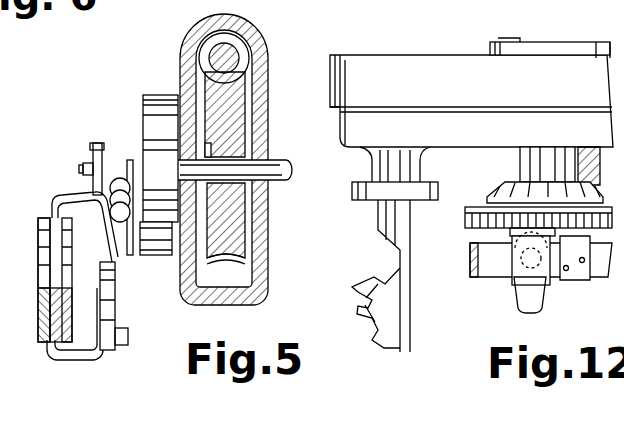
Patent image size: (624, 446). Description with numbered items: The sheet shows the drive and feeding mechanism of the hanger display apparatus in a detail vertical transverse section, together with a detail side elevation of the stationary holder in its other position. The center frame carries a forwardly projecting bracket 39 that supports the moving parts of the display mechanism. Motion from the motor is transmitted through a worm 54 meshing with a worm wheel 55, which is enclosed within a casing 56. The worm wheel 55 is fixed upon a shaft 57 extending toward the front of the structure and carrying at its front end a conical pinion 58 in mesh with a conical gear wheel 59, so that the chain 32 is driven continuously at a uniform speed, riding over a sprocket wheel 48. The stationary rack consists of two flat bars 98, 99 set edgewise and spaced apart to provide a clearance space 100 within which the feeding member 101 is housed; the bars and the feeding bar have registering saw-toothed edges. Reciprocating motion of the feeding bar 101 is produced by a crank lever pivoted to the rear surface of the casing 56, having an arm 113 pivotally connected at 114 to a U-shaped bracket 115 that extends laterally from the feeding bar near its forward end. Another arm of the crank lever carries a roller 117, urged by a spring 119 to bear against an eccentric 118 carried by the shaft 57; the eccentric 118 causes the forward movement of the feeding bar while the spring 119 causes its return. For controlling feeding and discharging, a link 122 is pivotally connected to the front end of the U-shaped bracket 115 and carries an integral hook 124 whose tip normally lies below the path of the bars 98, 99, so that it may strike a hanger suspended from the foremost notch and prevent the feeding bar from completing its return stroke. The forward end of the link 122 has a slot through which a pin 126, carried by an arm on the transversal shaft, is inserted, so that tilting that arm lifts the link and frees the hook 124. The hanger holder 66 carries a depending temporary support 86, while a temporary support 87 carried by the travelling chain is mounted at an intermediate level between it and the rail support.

In FIG. 12, the chain 32 is at (474, 226).
In FIG. 12, the forwardly projecting bracket 39 is at (364, 52).
In FIG. 12, the sprocket wheel 48 is at (490, 211).
In FIG. 5, the worm 54 is at (215, 68).
In FIG. 5, the worm wheel 55 is at (238, 108).
In FIG. 5, the casing 56 is at (262, 137).
In FIG. 5, the shaft 57 is at (286, 163).
In FIG. 12, the conical pinion 58 is at (564, 160).
In FIG. 12, the conical gear wheel 59 is at (512, 190).
In FIG. 12, the hanger holder 66 is at (380, 213).
In FIG. 12, the temporary support 86 is at (393, 334).
In FIG. 12, the temporary support 87 is at (520, 304).
In FIG. 5, the flat bar 98 is at (42, 292).
In FIG. 5, the flat bar 99 is at (62, 296).
In FIG. 5, the clearance space 100 is at (50, 220).
In FIG. 5, the feeding member 101 is at (44, 245).
In FIG. 5, the arm 113 is at (122, 301).
In FIG. 5, the pivot 114 is at (129, 337).
In FIG. 5, the U-shaped bracket 115 is at (93, 361).
In FIG. 5, the roller 117 is at (155, 255).
In FIG. 5, the eccentric 118 is at (143, 97).
In FIG. 5, the spring 119 is at (118, 182).
In FIG. 5, the link 122 is at (93, 148).
In FIG. 5, the hook 124 is at (58, 196).
In FIG. 5, the pin 126 is at (80, 168).